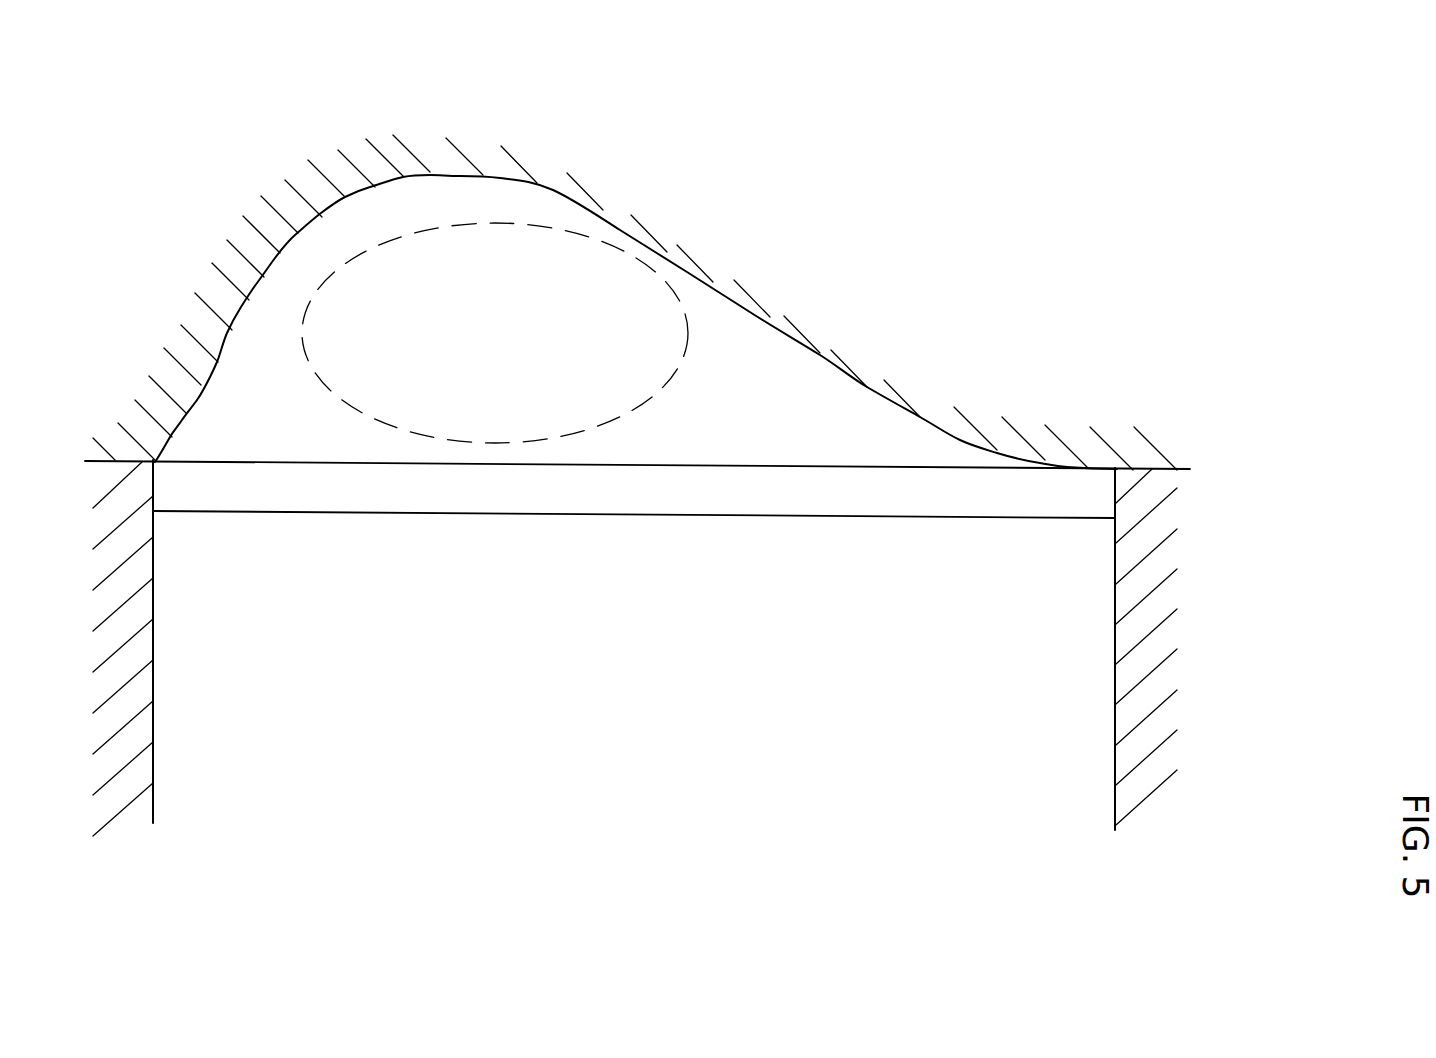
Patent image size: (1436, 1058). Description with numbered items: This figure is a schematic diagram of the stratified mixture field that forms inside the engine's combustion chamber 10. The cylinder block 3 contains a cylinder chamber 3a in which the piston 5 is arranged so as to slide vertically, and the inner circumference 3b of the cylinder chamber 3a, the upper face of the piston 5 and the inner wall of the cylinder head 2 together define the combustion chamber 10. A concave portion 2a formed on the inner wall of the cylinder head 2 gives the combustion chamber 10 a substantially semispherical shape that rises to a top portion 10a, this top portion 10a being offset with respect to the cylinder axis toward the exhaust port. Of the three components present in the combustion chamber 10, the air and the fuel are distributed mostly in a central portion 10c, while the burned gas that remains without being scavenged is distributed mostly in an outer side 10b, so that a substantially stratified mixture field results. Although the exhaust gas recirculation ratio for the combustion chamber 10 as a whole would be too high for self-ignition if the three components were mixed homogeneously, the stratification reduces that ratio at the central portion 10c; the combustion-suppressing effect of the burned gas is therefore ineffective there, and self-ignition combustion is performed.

The cylinder head 2 is at (1014, 447).
The concave portion 2a is at (870, 386).
The cylinder block 3 is at (140, 777).
The cylinder chamber 3a is at (216, 476).
The inner circumference of the cylinder chamber 3b is at (153, 697).
The piston 5 is at (553, 695).
The combustion chamber 10 is at (296, 424).
The top portion 10a is at (467, 177).
The outer side 10b is at (746, 420).
The central portion 10c is at (452, 393).